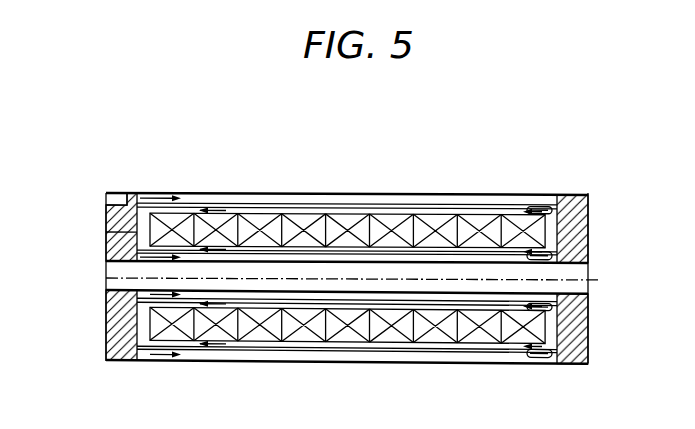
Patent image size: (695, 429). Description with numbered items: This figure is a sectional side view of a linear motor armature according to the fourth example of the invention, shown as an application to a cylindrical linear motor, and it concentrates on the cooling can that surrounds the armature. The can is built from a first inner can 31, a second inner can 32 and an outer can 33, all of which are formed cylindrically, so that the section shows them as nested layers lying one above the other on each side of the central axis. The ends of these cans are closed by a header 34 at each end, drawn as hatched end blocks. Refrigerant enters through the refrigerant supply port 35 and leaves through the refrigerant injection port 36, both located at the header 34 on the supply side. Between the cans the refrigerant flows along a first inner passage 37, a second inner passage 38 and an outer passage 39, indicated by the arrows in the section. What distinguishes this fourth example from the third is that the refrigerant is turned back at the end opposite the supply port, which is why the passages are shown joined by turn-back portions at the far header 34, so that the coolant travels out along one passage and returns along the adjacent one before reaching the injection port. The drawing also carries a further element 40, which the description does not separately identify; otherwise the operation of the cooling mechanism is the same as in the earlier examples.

The first inner can 31 is at (508, 255).
The second inner can 32 is at (352, 207).
The outer can 33 is at (438, 197).
The header 34 is at (118, 333).
The refrigerant supply port 35 is at (114, 200).
The refrigerant injection port 36 is at (116, 233).
The first inner passage 37 is at (155, 308).
The second inner passage 38 is at (187, 207).
The outer passage 39 is at (256, 201).
The heat exchange passage 40 is at (346, 338).